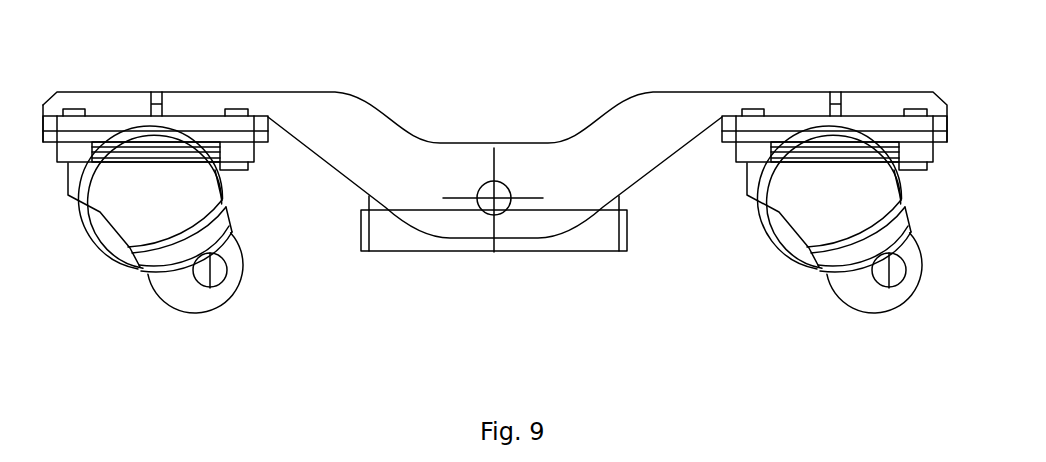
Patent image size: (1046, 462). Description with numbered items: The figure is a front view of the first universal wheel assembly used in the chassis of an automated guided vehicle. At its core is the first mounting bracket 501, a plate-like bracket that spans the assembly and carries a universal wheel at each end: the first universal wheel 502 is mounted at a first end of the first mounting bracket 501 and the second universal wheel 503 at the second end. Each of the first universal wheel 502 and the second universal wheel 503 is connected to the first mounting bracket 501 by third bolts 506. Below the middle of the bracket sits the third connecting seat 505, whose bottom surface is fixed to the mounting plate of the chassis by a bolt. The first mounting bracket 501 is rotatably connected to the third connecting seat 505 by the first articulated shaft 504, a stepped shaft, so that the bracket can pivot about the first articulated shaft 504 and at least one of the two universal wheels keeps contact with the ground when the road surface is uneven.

The first mounting bracket 501 is at (604, 157).
The first universal wheel 502 is at (865, 320).
The second universal wheel 503 is at (237, 317).
The first articulated shaft 504 is at (489, 193).
The third connecting seat 505 is at (381, 228).
The third bolts 506 is at (753, 150).